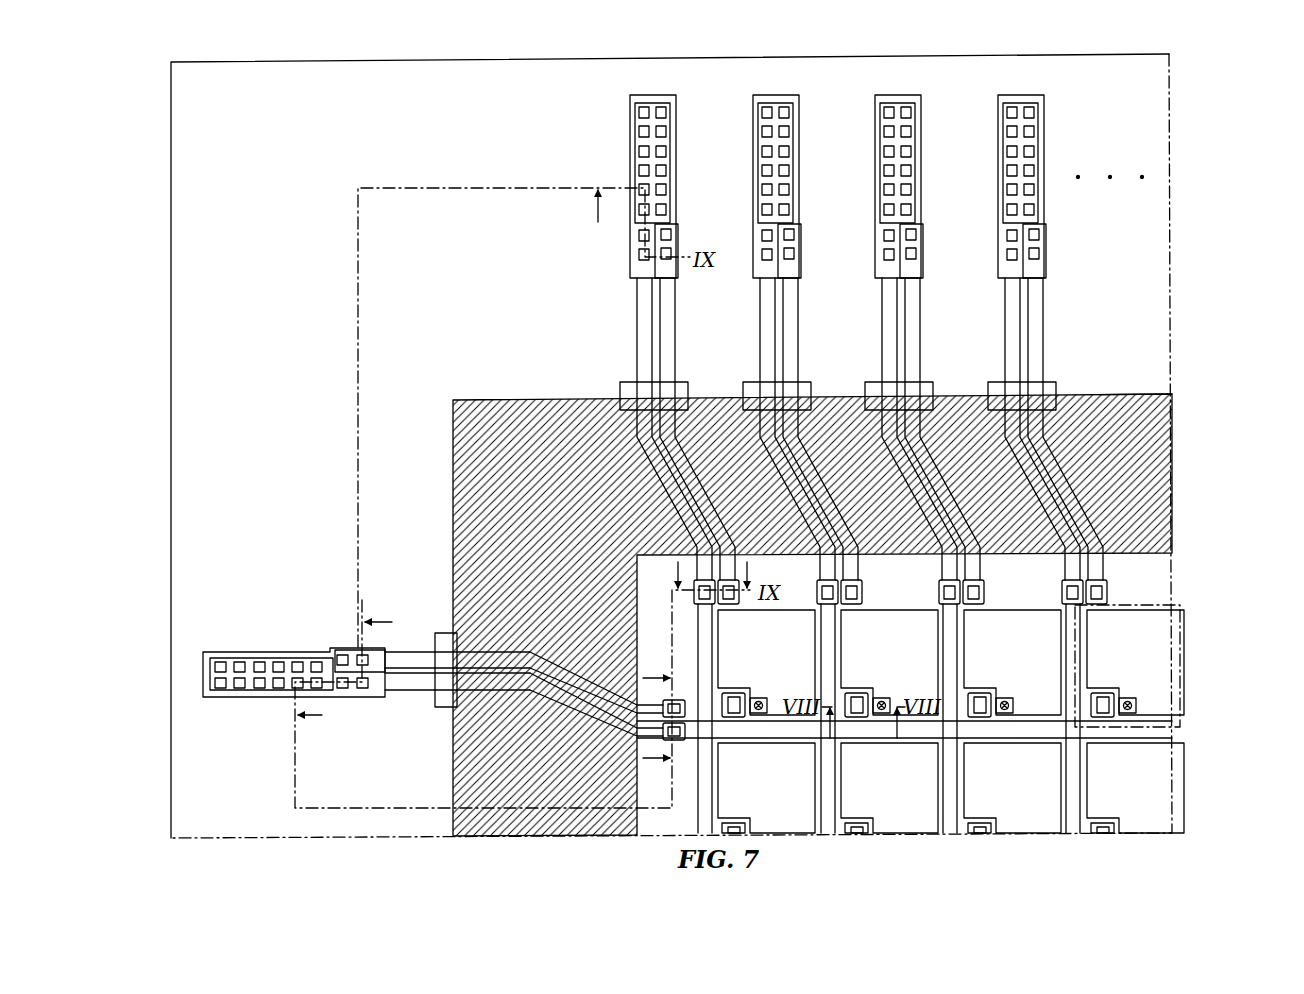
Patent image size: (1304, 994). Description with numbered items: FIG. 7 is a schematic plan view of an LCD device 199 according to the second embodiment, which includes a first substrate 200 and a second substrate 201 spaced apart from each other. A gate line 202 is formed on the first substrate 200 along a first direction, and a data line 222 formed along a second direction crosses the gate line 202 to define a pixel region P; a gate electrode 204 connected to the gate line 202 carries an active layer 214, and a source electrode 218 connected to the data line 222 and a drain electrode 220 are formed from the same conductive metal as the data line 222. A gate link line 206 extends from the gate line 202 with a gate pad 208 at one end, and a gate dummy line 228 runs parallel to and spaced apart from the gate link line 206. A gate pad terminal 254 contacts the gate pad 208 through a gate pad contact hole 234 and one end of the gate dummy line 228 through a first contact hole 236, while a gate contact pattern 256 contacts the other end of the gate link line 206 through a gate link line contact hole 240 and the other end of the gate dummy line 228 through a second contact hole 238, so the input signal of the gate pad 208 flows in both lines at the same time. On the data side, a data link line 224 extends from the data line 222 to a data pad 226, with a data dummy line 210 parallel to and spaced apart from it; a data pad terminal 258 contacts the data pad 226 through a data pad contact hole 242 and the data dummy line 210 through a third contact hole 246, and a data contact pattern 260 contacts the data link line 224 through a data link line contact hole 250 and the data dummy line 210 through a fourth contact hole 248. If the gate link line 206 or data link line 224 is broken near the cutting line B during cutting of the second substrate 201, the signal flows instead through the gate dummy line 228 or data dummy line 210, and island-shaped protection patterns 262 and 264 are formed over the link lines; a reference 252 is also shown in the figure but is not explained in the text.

The LCD device 199 is at (953, 651).
The first substrate 200 is at (421, 58).
The second substrate 201 is at (470, 399).
The gate line 202 is at (938, 747).
The gate electrode 204 is at (858, 693).
The gate link line 206 is at (596, 707).
The gate pad 208 is at (290, 644).
The data dummy line 210 is at (670, 348).
The active layer 214 is at (866, 694).
The source electrode 218 is at (861, 740).
The drain electrode 220 is at (893, 700).
The data line 222 is at (1086, 785).
The data link line 224 is at (637, 329).
The data pad 226 is at (669, 112).
The gate dummy line 228 is at (567, 660).
The gate pad contact hole 234 is at (299, 660).
The first contact hole 236 is at (343, 655).
The second contact hole 238 is at (617, 726).
The gate link line contact hole 240 is at (663, 734).
The data pad contact hole 242 is at (636, 108).
The third contact hole 246 is at (668, 264).
The fourth contact hole 248 is at (736, 604).
The data link line contact hole 250 is at (718, 547).
The pixel electrode 252 is at (962, 638).
The gate pad terminal 254 is at (271, 641).
The gate contact pattern 256 is at (663, 706).
The data pad terminal 258 is at (1046, 234).
The data contact pattern 260 is at (1110, 592).
The protection pattern 262 is at (569, 707).
The protection pattern 264 is at (1058, 388).
The cutting line B is at (1137, 394).
The pixel region P is at (1182, 669).